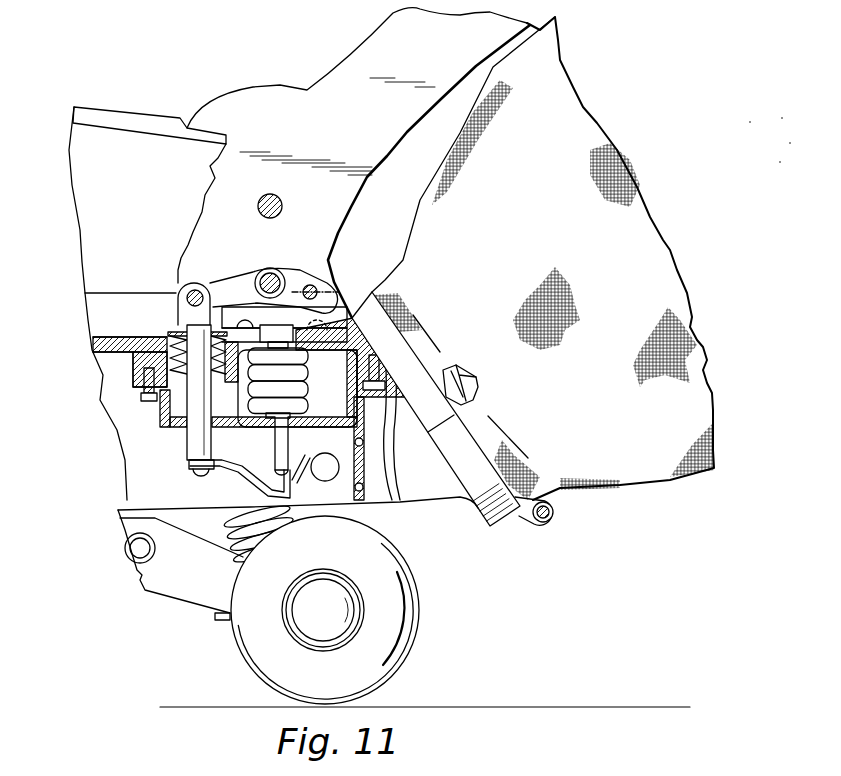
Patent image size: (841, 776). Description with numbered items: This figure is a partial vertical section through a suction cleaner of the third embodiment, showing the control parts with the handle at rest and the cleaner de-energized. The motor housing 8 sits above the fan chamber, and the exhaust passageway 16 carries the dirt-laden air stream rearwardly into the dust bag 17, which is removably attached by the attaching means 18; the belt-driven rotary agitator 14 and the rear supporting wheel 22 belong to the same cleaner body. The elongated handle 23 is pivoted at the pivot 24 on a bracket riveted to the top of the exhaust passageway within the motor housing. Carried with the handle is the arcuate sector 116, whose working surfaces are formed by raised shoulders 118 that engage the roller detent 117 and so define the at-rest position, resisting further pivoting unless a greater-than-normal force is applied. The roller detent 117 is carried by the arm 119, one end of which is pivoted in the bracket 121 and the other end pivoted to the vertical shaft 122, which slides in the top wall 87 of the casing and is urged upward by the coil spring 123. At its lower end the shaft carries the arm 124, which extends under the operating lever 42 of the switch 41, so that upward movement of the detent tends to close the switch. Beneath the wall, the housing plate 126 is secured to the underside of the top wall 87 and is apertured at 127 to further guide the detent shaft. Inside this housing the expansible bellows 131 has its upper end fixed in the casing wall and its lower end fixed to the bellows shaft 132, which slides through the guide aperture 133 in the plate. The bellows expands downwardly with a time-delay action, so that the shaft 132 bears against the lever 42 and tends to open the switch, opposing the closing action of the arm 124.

The motor housing 8 is at (88, 165).
The rotary agitator 14 is at (137, 303).
The exhaust passageway 16 is at (452, 409).
The dust bag 17 is at (642, 223).
The attaching means 18 is at (480, 388).
The rear supporting wheel 22 is at (412, 613).
The handle 23 is at (400, 40).
The handle pivot 24 is at (278, 198).
The switch 41 is at (347, 474).
The operating lever 42 is at (300, 460).
The top wall 87 is at (140, 339).
The arcuate sector 116 is at (264, 267).
The roller detent 117 is at (271, 328).
The raised shoulders 118 is at (222, 258).
The arm 119 is at (262, 305).
The bracket 121 is at (302, 351).
The vertical shaft 122 is at (209, 395).
The coil spring 123 is at (177, 349).
The arm 124 is at (245, 468).
The housing plate 126 is at (165, 421).
The aperture 127 is at (263, 414).
The expansible bellows 131 is at (307, 376).
The bellows shaft 132 is at (275, 440).
The guide aperture 133 is at (303, 418).